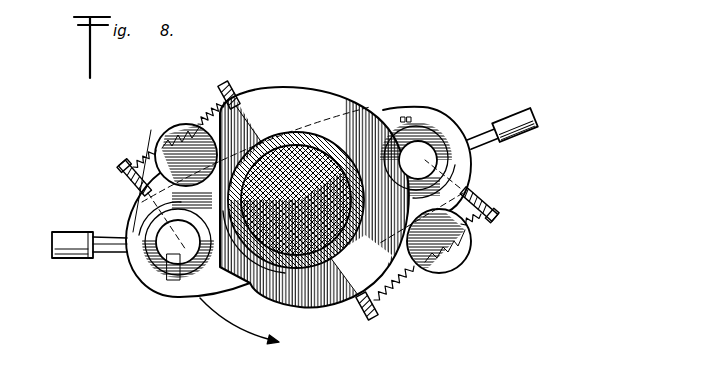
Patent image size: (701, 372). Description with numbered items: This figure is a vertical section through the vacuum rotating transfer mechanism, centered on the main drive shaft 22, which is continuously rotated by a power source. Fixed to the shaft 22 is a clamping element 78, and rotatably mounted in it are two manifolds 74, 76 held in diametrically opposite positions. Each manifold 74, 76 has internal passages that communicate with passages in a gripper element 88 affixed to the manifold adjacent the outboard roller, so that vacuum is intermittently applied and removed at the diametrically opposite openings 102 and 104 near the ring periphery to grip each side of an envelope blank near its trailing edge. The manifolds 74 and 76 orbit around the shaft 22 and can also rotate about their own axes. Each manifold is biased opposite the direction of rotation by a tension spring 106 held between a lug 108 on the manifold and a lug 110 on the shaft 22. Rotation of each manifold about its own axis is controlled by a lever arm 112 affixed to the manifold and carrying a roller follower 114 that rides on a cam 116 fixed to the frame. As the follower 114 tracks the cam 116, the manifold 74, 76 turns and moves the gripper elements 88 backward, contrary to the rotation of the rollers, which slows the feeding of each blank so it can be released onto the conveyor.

The main drive shaft 22 is at (303, 150).
The manifold 74 is at (421, 150).
The manifold 76 is at (160, 250).
The clamping element 78 is at (397, 111).
The gripper element 88 is at (79, 258).
The opening 102 is at (53, 238).
The opening 104 is at (538, 113).
The tension spring 106 is at (206, 114).
The lug 108 is at (124, 162).
The lug 110 is at (233, 86).
The lever arm 112 is at (142, 202).
The roller follower 114 is at (162, 133).
The cam 116 is at (300, 95).